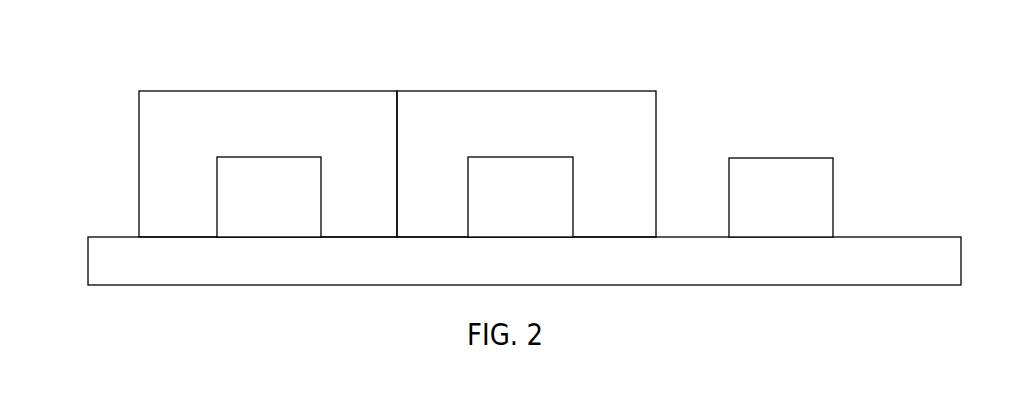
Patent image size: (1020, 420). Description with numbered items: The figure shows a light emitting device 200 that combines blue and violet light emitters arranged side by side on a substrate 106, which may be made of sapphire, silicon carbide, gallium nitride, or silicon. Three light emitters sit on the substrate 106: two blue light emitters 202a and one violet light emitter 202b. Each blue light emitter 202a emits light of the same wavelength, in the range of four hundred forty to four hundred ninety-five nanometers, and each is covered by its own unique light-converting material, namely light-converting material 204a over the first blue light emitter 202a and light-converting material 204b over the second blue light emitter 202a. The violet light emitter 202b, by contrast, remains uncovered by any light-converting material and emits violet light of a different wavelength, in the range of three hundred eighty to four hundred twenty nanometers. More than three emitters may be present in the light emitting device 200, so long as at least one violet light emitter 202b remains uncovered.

The light emitting device 200 is at (501, 151).
The substrate 106 is at (143, 270).
The blue light emitters 202a is at (292, 208).
The violet light emitter 202b is at (808, 208).
The light-converting material 204a is at (311, 115).
The light-converting material 204b is at (536, 115).